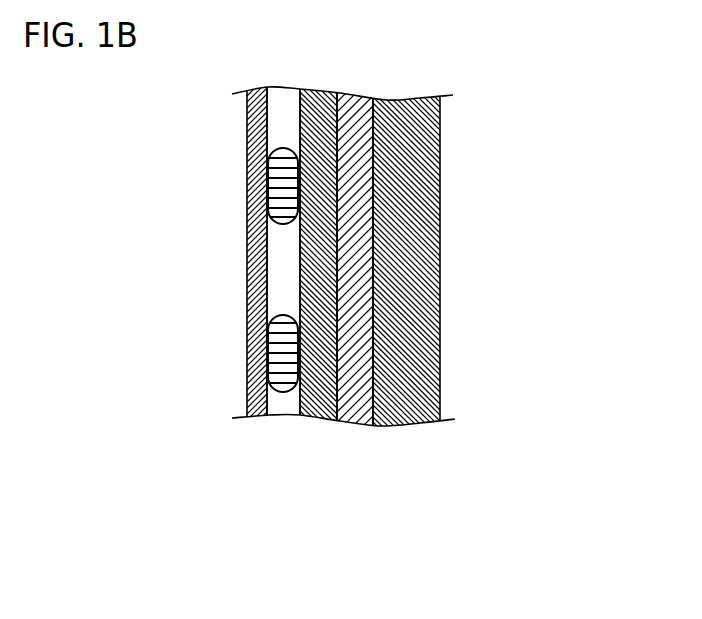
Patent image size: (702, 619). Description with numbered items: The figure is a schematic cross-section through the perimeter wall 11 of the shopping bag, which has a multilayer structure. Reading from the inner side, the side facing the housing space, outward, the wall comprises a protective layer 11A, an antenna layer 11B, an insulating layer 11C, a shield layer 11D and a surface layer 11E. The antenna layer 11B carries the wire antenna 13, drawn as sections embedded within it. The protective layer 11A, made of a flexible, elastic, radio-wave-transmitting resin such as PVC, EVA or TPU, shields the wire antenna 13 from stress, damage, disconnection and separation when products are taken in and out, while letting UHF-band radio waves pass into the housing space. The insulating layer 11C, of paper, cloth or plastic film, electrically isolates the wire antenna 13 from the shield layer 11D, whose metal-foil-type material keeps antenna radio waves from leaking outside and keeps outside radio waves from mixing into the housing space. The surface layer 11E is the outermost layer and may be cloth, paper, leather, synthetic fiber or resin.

The perimeter wall 11 is at (368, 262).
The protective layer 11A is at (260, 408).
The antenna layer 11B is at (283, 410).
The insulating layer 11C is at (313, 412).
The shield layer 11D is at (355, 410).
The surface layer 11E is at (417, 410).
The wire antenna 13 is at (287, 183).